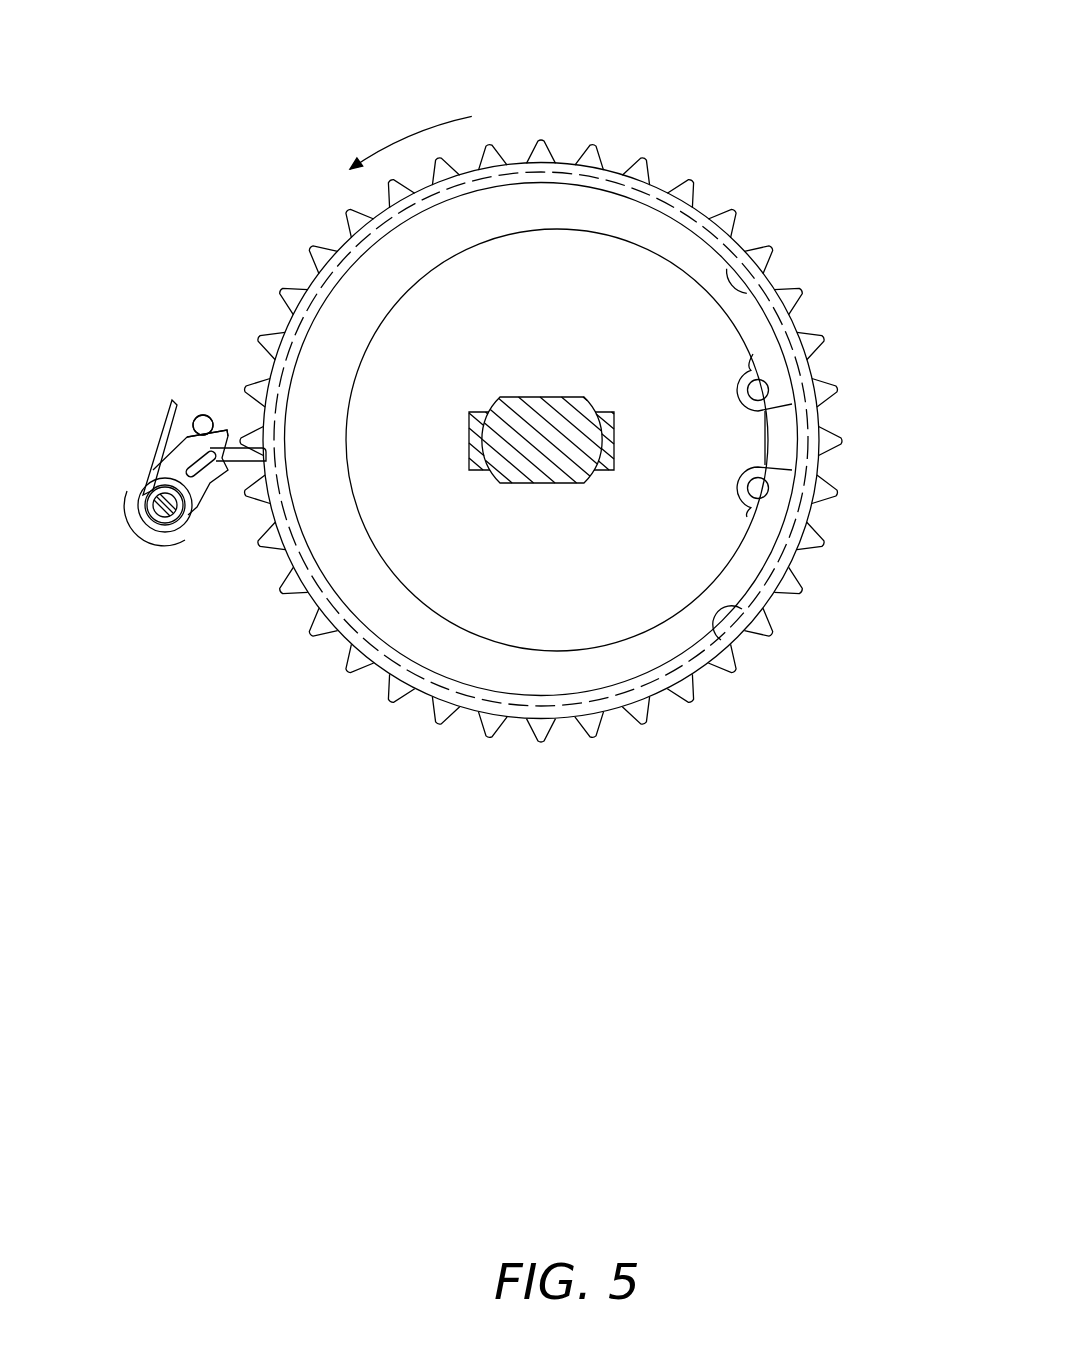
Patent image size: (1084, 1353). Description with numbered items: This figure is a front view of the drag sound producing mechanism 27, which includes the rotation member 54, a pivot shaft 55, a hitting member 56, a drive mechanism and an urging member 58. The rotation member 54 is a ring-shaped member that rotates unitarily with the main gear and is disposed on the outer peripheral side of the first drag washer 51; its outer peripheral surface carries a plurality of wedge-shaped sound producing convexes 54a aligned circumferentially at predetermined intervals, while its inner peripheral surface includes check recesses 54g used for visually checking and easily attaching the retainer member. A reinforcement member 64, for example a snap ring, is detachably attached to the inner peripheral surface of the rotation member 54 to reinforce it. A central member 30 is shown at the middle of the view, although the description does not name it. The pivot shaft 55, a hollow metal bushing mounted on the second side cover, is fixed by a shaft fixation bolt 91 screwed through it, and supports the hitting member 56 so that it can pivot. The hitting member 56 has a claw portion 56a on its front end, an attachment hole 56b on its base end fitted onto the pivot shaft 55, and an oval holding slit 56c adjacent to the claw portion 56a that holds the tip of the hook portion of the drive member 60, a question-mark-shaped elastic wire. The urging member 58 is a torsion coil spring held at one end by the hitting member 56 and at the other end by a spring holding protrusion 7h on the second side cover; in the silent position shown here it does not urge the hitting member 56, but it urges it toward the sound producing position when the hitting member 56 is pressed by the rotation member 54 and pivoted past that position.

The drag sound producing mechanism 27 is at (620, 126).
The rotation member 54 is at (676, 158).
The sound producing convexes 54a is at (347, 212).
The check recesses 54g is at (738, 264).
The first drag washer 51 is at (640, 560).
The reinforcement member 64 is at (442, 640).
The hub shaft 30 is at (527, 463).
The hitting member 56 is at (175, 560).
The claw portion 56a is at (226, 430).
The attachment hole 56b is at (192, 522).
The oval holding slit 56c is at (171, 398).
The spring holding protrusion 7h is at (203, 417).
The urging member 58 is at (153, 447).
The pivot shaft 55 is at (138, 525).
The shaft fixation bolt 91 is at (165, 517).
The drive member 60 is at (247, 470).